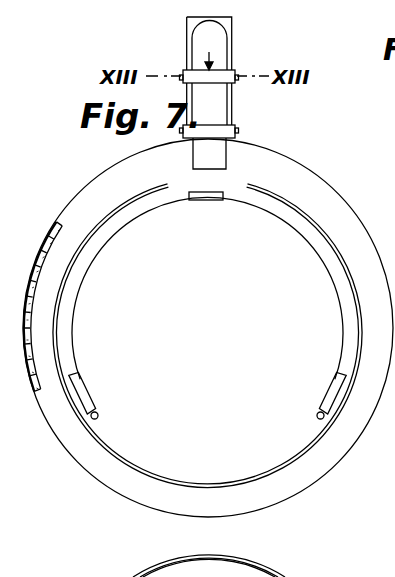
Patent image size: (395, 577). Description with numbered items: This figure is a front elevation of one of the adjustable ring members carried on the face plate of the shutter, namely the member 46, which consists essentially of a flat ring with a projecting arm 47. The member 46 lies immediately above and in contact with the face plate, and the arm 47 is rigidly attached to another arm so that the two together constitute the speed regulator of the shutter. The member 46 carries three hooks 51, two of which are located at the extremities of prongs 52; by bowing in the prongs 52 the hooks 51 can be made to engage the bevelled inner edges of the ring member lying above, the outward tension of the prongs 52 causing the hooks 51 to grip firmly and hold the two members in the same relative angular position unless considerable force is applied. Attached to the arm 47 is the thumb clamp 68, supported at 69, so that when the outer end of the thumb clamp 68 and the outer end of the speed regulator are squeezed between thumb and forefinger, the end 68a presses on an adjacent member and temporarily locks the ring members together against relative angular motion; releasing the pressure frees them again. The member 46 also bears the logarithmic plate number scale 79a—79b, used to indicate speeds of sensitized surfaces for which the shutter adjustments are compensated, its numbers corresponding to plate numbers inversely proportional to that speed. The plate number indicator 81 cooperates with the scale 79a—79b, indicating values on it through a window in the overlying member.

The member 46 is at (198, 483).
The projecting arm 47 is at (232, 107).
The hooks 51 is at (203, 200).
The prongs 52 is at (72, 297).
The thumb clamp 68 is at (219, 43).
The end of thumb clamp 68a is at (217, 153).
The support of thumb clamp 69 is at (182, 73).
The end of plate number scale 79a is at (47, 387).
The end of plate number scale 79b is at (66, 212).
The plate number indicator 81 is at (394, 242).